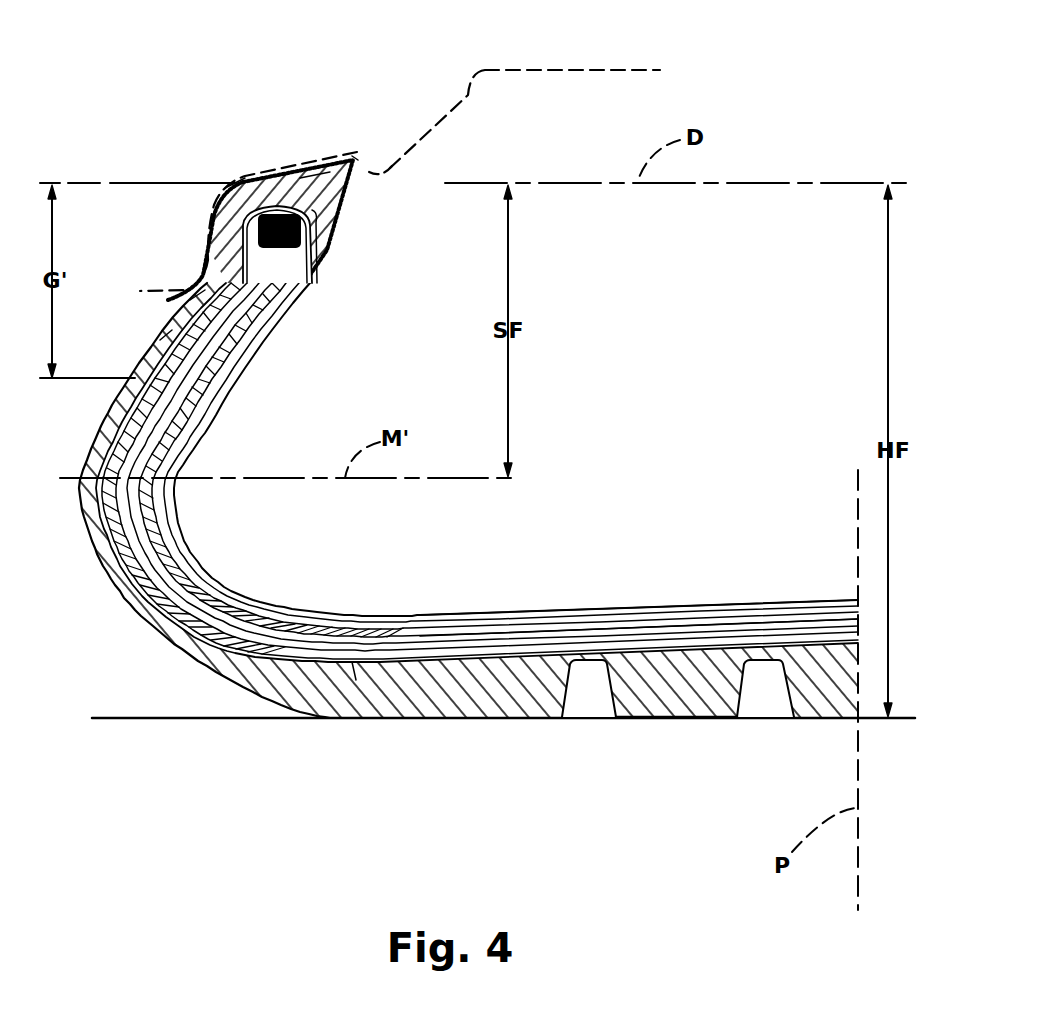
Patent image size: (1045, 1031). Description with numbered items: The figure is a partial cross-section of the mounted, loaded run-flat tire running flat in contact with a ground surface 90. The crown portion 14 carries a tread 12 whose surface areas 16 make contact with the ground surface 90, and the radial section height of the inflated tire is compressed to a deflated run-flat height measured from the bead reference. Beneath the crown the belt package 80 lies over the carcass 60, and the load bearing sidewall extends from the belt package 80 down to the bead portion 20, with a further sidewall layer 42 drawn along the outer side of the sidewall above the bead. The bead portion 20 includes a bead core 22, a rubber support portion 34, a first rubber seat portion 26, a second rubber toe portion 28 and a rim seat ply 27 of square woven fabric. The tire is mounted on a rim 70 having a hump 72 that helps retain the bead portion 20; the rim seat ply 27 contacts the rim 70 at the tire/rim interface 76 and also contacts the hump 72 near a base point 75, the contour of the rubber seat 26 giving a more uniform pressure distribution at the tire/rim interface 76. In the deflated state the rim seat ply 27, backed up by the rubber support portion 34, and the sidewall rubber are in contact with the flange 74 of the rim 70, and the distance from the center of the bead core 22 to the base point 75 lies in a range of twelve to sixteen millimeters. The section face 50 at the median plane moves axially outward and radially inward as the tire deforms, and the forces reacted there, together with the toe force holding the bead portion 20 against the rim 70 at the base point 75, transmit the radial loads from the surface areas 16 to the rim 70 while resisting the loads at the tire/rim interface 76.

The tread rubber portion 12 is at (553, 680).
The crown portion 14 is at (686, 724).
The surface areas 16 is at (427, 722).
The bead portion 20 is at (333, 255).
The bead core 22 is at (283, 290).
The first rubber seat portion 26 is at (245, 172).
The rim seat ply 27 is at (280, 180).
The second rubber toe portion 28 is at (322, 178).
The rubber support portion 34 is at (197, 300).
The ply turnup 42 is at (165, 340).
The section face 50 is at (190, 420).
The carcass 60 is at (677, 601).
The rim 70 is at (473, 67).
The hump 72 is at (383, 165).
The flange 74 is at (166, 288).
The base point 75 is at (358, 158).
The tire/rim interface 76 is at (265, 172).
The belt package 80 is at (357, 682).
The ground surface 90 is at (233, 722).